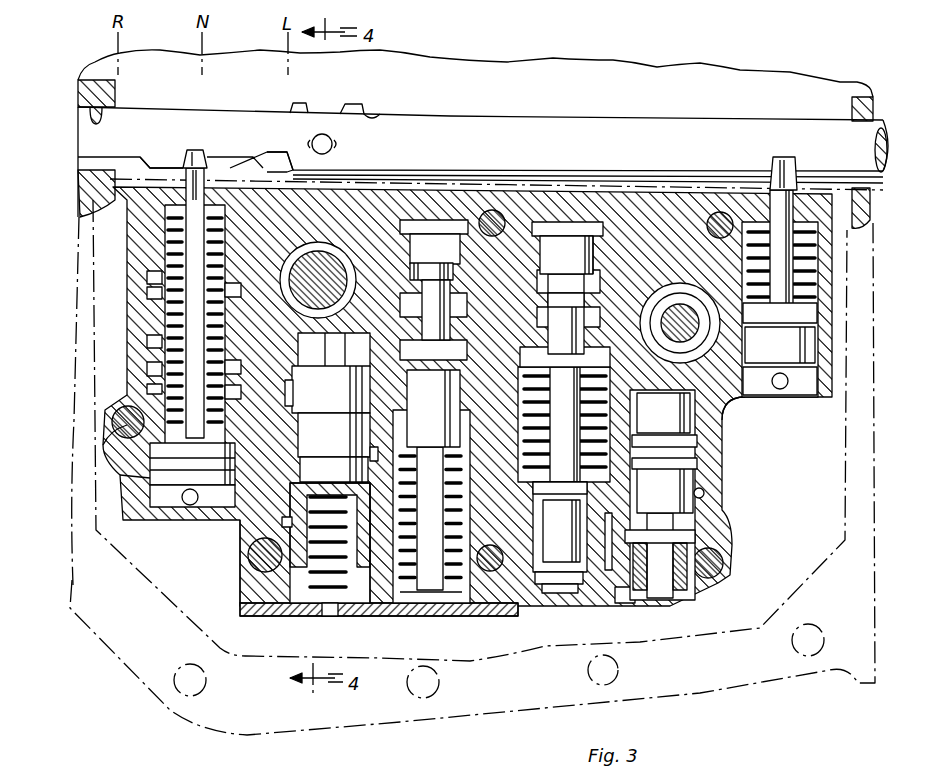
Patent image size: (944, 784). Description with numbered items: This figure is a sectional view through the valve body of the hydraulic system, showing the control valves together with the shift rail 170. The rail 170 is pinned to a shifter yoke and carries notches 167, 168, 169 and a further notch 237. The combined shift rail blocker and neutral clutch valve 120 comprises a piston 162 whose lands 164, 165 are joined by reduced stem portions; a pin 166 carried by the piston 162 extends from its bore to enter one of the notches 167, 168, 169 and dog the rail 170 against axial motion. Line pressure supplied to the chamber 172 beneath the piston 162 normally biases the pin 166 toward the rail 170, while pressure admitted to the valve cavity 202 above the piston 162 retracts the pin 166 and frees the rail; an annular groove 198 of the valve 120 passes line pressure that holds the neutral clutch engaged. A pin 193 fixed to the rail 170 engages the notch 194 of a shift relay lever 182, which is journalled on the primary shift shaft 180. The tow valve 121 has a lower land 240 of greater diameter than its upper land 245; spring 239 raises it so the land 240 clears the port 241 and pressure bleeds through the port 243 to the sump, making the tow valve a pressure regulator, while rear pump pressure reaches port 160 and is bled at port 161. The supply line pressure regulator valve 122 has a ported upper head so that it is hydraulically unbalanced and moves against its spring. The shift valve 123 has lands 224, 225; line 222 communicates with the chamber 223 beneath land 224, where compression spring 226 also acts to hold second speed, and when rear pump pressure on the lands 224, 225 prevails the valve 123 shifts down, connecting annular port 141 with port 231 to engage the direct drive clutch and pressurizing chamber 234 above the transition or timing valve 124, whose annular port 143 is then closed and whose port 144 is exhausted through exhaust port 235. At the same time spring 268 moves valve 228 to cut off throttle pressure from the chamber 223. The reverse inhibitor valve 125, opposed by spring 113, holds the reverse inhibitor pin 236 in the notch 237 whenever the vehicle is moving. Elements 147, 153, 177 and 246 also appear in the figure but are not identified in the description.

The spring 113 is at (827, 272).
The combined shift rail blocker and neutral clutch valve 120 is at (231, 416).
The tow valve 121 is at (293, 523).
The supply line pressure regulator valve 122 is at (433, 270).
The shift valve 123 is at (587, 232).
The transition or timing valve 124 is at (668, 487).
The reverse inhibitor valve 125 is at (816, 313).
The annular port 141 is at (540, 316).
The annular port 143 is at (700, 441).
The port 144 is at (700, 463).
The valve plunger 147 is at (424, 340).
The boss 153 is at (140, 456).
The port 160 is at (372, 452).
The port 161 is at (372, 481).
The piston 162 is at (182, 440).
The land 164 is at (150, 342).
The land 165 is at (150, 294).
The pin 166 is at (205, 185).
The notch 167 is at (123, 162).
The notch 168 is at (195, 152).
The notch 169 is at (275, 150).
The shift rail 170 is at (444, 130).
The chamber 172 is at (150, 480).
The bore 177 is at (690, 330).
The primary shift shaft 180 is at (330, 258).
The shift relay lever 182 is at (350, 106).
The pin 193 is at (322, 134).
The notch 194 is at (298, 103).
The annular groove 198 is at (150, 370).
The valve cavity 202 is at (150, 279).
The line 222 is at (600, 523).
The valve chamber 223 is at (540, 370).
The land 224 is at (520, 360).
The land 225 is at (548, 230).
The compression spring 226 is at (522, 440).
The valve 228 is at (558, 574).
The port 231 is at (538, 300).
The valve chamber 234 is at (727, 400).
The exhaust port 235 is at (704, 493).
The reverse inhibitor pin 236 is at (776, 198).
The notch 237 is at (788, 167).
The spring 239 is at (305, 592).
The lower land 240 is at (284, 522).
The port 241 is at (373, 523).
The port 243 is at (330, 604).
The upper land 245 is at (307, 377).
The valve land 246 is at (292, 392).
The spring 268 is at (610, 407).